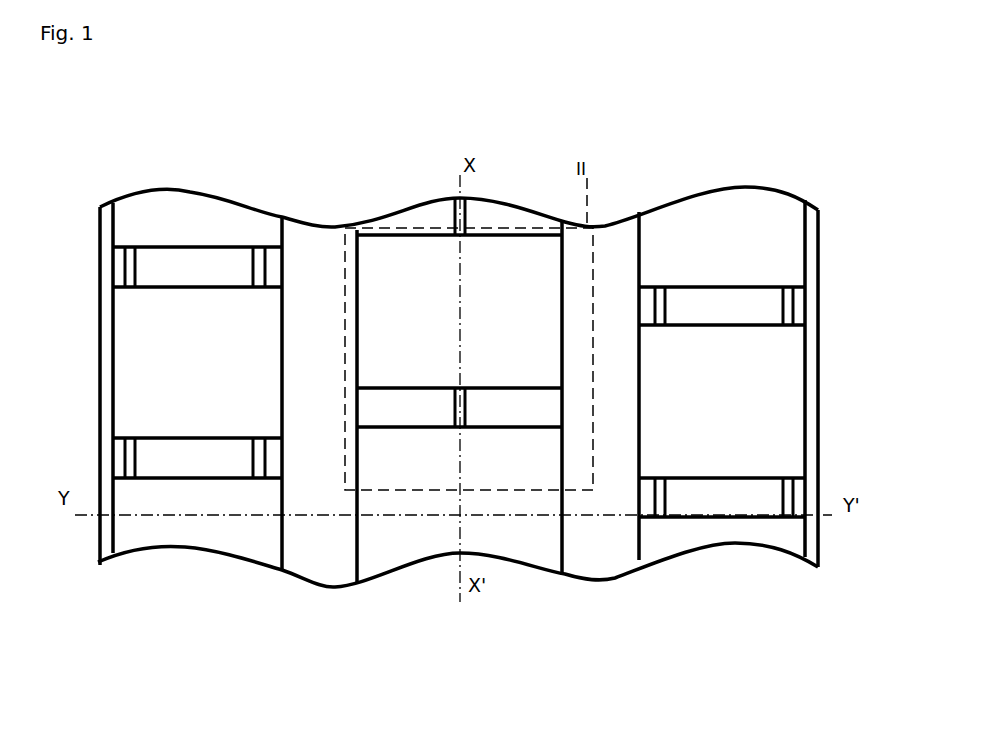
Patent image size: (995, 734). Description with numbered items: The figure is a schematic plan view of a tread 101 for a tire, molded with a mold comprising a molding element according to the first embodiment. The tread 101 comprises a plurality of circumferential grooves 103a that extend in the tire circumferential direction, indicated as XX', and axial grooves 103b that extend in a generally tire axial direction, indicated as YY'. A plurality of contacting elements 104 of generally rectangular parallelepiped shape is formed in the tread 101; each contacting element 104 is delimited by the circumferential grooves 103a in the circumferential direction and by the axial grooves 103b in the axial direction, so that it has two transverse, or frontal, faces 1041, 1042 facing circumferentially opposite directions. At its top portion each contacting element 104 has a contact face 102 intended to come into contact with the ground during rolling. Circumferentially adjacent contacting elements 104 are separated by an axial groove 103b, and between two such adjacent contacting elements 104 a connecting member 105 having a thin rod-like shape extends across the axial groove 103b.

The tread 101 is at (175, 154).
The contact face 102 is at (155, 207).
The circumferential groove 103a is at (328, 545).
The axial groove 103b is at (160, 262).
The contacting element 104 is at (113, 217).
The transverse face 1041 is at (190, 245).
The transverse face 1042 is at (195, 285).
The connecting member 105 is at (258, 458).